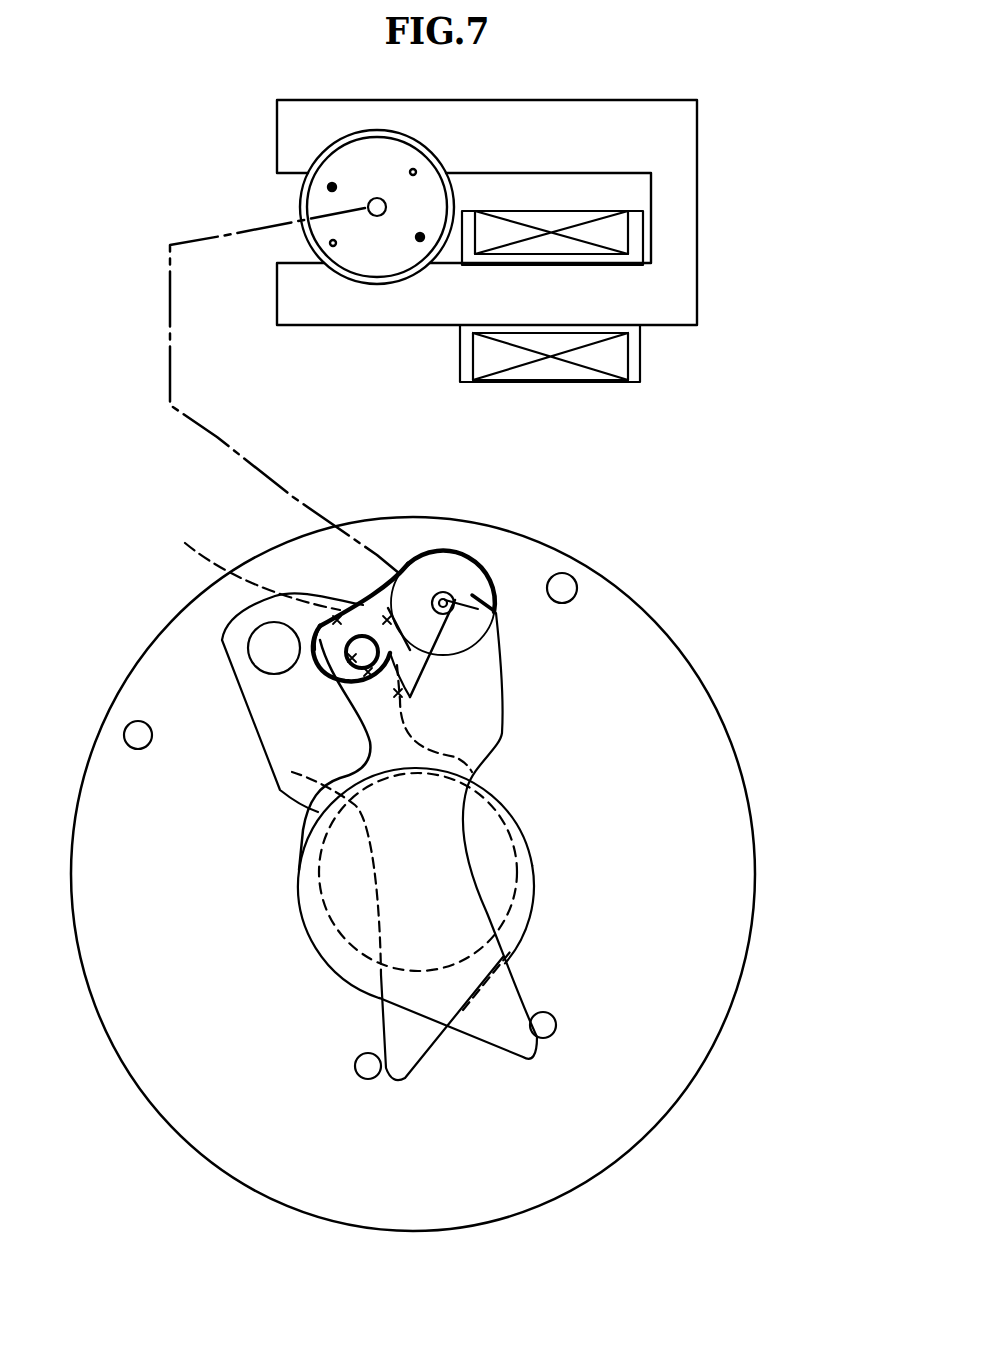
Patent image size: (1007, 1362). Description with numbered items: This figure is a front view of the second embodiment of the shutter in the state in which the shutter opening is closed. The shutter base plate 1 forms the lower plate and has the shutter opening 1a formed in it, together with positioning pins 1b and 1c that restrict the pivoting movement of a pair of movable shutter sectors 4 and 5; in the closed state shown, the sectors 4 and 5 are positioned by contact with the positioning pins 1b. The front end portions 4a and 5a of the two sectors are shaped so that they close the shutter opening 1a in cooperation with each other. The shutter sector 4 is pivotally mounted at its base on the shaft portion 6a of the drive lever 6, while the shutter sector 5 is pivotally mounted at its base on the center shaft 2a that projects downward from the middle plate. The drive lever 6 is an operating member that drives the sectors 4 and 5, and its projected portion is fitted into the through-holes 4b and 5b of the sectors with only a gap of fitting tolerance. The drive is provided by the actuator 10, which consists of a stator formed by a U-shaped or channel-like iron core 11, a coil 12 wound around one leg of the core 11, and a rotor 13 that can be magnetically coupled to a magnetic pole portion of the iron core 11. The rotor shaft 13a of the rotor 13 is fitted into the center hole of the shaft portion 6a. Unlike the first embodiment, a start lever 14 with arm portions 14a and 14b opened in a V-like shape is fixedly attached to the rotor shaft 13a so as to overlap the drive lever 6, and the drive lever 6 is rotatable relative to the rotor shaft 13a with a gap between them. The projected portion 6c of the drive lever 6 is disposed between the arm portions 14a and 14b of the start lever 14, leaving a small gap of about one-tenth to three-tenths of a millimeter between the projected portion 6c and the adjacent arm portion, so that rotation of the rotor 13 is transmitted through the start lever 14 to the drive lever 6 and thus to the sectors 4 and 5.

The shutter base plate 1 is at (690, 758).
The shutter opening 1a is at (530, 897).
The positioning pins 1b is at (357, 1067).
The positioning pins 1c is at (128, 732).
The center shaft 2a is at (272, 648).
The movable shutter sector 4 is at (492, 740).
The front end portion 4a is at (312, 912).
The through-hole 4b is at (363, 605).
The movable shutter sector 5 is at (296, 768).
The front end portion 5a is at (528, 845).
The through-hole 5b is at (246, 570).
The drive lever 6 is at (497, 605).
The shaft portion 6a is at (498, 592).
The projected portion 6c is at (410, 666).
The actuator 10 is at (546, 268).
The iron core 11 is at (677, 307).
The coil 12 is at (603, 360).
The rotor 13 is at (373, 254).
The rotor shaft 13a is at (366, 208).
The start lever 14 is at (415, 656).
The arm portion 14a is at (410, 697).
The arm portion 14b is at (322, 625).